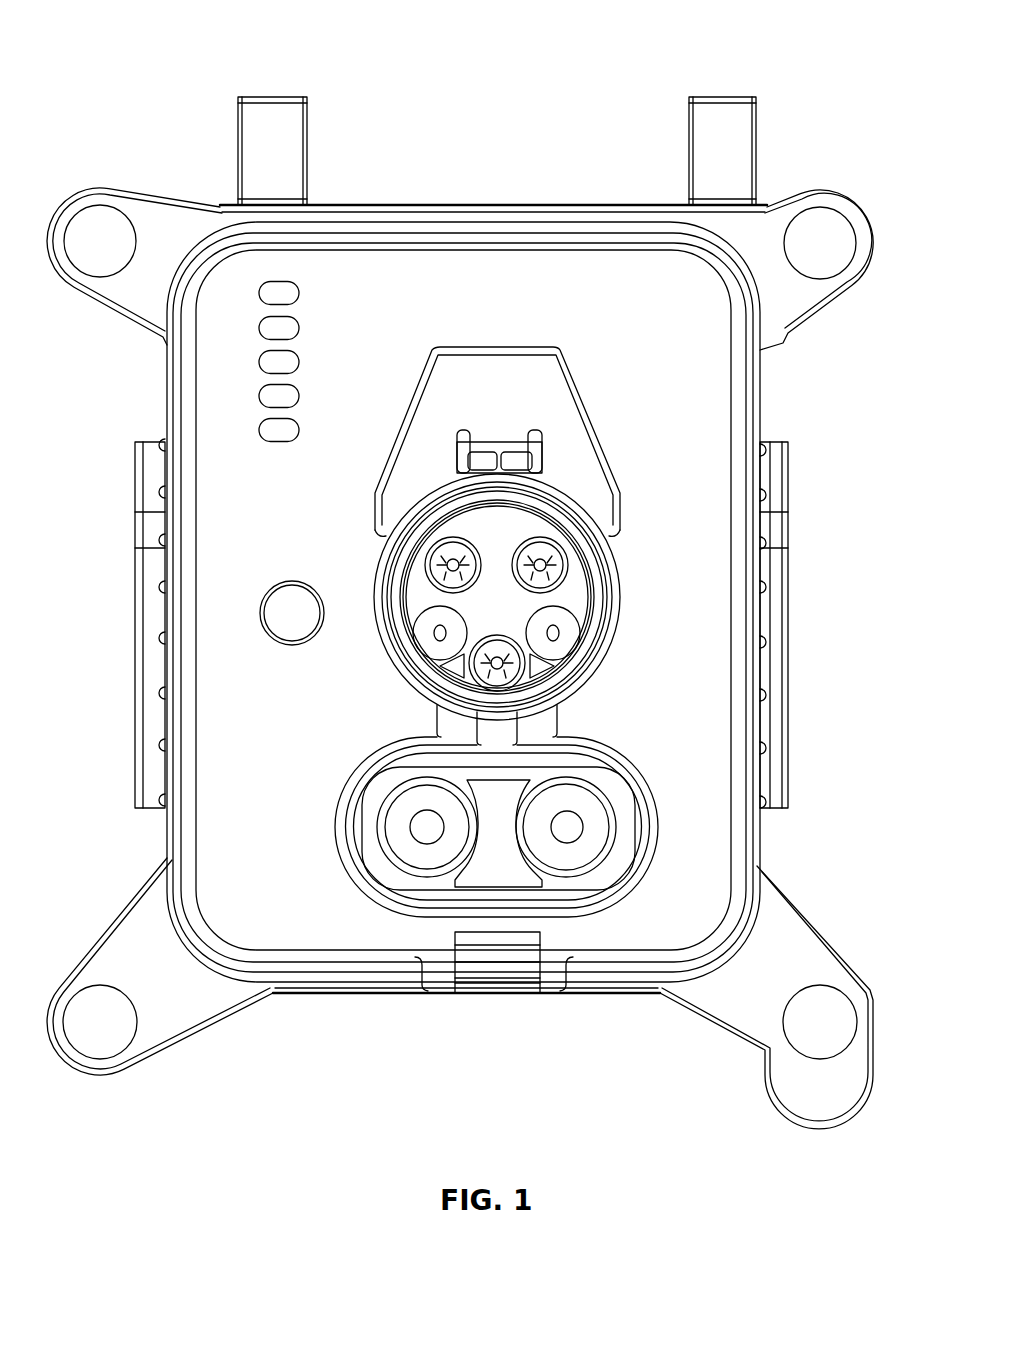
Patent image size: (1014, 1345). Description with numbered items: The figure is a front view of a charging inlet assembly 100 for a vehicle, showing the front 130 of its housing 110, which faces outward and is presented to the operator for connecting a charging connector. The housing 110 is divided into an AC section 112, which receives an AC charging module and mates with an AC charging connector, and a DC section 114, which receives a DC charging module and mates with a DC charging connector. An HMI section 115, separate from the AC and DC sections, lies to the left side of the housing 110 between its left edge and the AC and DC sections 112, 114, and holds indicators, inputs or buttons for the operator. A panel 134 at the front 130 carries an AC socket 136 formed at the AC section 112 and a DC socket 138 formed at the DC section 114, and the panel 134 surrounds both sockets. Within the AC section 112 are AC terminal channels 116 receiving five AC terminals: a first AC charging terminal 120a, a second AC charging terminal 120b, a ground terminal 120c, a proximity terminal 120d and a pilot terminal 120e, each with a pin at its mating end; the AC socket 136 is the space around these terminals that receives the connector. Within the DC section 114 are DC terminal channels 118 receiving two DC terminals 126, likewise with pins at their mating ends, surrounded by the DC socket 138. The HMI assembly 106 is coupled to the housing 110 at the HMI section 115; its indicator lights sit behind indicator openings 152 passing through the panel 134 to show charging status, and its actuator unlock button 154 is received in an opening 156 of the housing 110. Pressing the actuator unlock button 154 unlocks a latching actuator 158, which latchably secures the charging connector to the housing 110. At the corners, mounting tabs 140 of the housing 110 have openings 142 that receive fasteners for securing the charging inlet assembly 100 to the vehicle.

The charging inlet assembly 100 is at (155, 62).
The human machine interface (HMI) assembly 106 is at (247, 365).
The housing 110 is at (692, 642).
The AC section 112 is at (623, 568).
The DC section 114 is at (668, 806).
The HMI section 115 is at (322, 322).
The AC terminal channels 116 is at (580, 620).
The DC terminal channels 118 is at (613, 797).
The first AC charging terminal 120a is at (453, 563).
The second AC charging terminal 120b is at (548, 566).
The ground terminal 120c is at (502, 693).
The proximity terminal 120d is at (563, 645).
The pilot terminal 120e is at (440, 633).
The DC terminals 126 is at (568, 832).
The front 130 is at (168, 858).
The panel 134 is at (500, 303).
The AC socket 136 is at (573, 523).
The DC socket 138 is at (633, 863).
The mounting tabs 140 is at (150, 1010).
The openings 142 is at (93, 1031).
The indicator openings 152 is at (252, 397).
The actuator unlock button 154 is at (296, 615).
The opening 156 is at (264, 640).
The latching actuator 158 is at (505, 432).